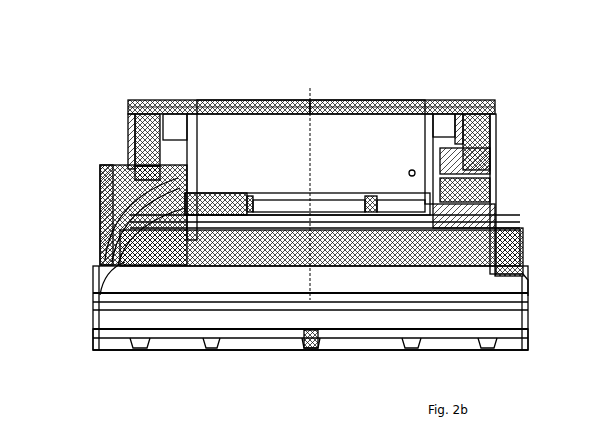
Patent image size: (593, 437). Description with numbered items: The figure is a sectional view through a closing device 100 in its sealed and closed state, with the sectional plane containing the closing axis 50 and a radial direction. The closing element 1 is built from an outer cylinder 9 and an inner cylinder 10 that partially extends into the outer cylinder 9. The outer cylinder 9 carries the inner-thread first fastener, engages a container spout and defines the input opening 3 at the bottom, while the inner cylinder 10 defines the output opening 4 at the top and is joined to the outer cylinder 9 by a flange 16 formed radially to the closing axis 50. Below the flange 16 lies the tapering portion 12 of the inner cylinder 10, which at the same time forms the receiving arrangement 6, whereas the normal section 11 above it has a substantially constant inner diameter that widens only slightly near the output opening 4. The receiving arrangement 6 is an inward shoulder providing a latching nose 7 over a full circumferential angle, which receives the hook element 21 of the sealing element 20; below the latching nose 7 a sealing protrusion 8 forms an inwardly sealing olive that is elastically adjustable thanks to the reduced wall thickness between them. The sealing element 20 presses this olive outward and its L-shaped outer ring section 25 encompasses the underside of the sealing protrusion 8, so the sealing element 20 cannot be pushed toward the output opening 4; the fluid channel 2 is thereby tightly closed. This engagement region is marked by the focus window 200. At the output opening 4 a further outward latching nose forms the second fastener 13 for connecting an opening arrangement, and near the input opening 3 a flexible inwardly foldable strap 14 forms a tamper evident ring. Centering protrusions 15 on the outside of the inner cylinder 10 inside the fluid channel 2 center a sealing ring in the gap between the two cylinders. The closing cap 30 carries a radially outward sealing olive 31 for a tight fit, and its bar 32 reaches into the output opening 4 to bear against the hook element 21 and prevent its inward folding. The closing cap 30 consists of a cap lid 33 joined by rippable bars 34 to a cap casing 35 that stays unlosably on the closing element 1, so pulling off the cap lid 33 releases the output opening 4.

The closing device 100 is at (432, 58).
The output opening 4 is at (340, 108).
The closing cap 30 is at (272, 100).
The cap lid 33 is at (392, 100).
The second fastener 13 is at (130, 118).
The sealing olive 31 is at (160, 125).
The bar 32 is at (175, 138).
The hook element 21 is at (135, 172).
The rippable bars 34 is at (490, 117).
The normal section 11 is at (486, 124).
The cap casing 35 is at (493, 124).
The inner cylinder 10 is at (486, 152).
The flange 16 is at (480, 165).
The focus window 200 is at (500, 213).
The tapering portion 12 is at (498, 222).
The outer cylinder 9 is at (523, 274).
The sealing element 20 is at (192, 228).
The outer ring section 25 is at (185, 224).
The closing element 1 is at (128, 175).
The centering protrusions 15 is at (110, 190).
The receiving arrangement 6 is at (115, 196).
The latching nose 7 is at (120, 252).
The sealing protrusion 8 is at (118, 270).
The fluid channel 2 is at (368, 296).
The strap 14 is at (447, 349).
The input opening 3 is at (307, 352).
The closing axis 50 is at (312, 334).